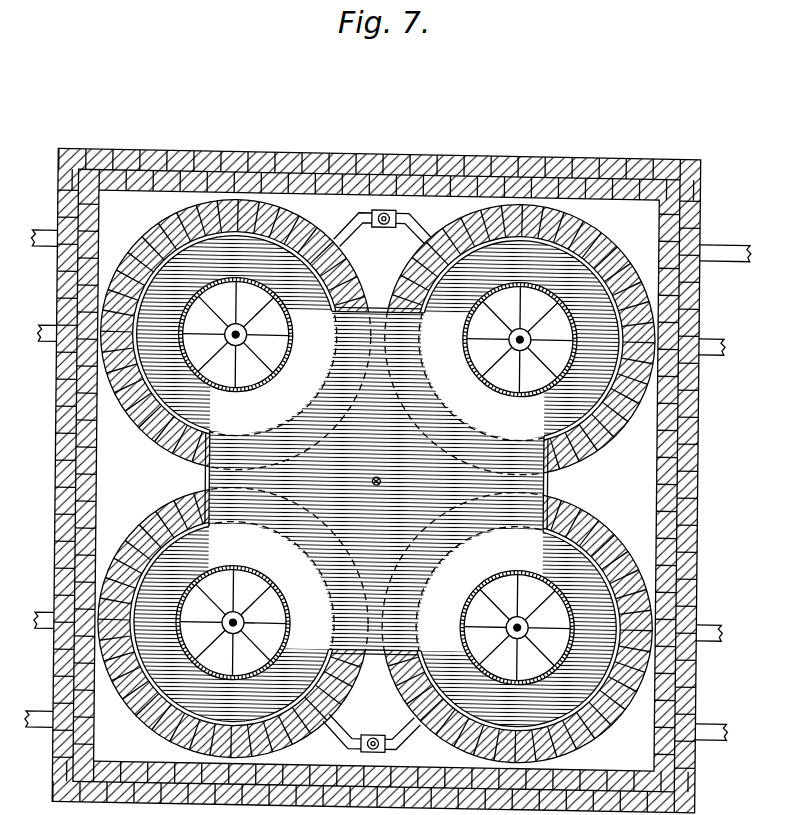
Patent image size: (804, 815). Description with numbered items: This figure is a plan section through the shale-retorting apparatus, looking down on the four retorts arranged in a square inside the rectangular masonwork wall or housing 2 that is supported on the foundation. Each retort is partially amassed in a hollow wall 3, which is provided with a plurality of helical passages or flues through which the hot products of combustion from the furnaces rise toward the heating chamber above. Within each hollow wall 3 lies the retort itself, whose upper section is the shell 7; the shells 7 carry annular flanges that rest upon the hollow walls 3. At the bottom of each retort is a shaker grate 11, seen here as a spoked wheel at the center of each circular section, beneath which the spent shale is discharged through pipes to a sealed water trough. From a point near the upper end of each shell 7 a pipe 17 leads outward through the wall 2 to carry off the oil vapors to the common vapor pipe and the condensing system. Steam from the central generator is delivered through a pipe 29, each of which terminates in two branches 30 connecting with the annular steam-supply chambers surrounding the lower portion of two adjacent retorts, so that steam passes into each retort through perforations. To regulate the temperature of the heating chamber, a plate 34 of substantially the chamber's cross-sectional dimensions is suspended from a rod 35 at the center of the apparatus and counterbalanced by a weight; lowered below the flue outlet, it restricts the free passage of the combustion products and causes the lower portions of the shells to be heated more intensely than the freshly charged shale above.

The rectangular wall or housing 2 is at (697, 460).
The hollow wall 3 is at (152, 517).
The shell 7 is at (333, 352).
The shaker grate 11 is at (290, 353).
The pipe 17 is at (37, 335).
The pipe 29 is at (393, 212).
The branch 30 is at (400, 229).
The plate 34 is at (547, 481).
The rod 35 is at (380, 478).